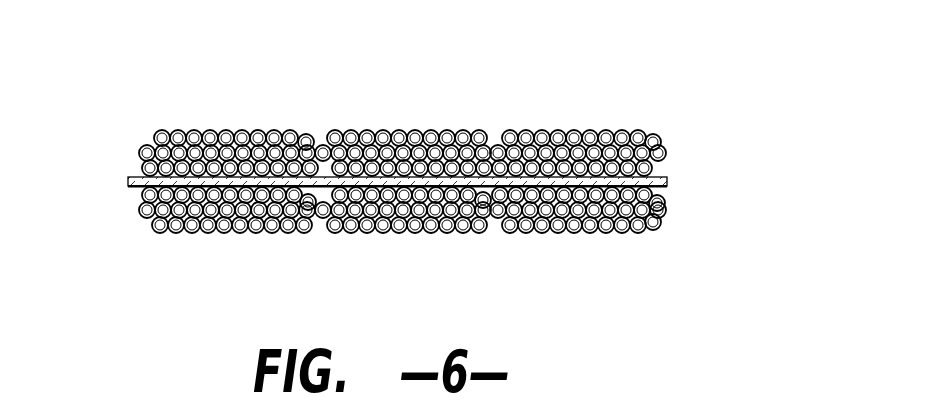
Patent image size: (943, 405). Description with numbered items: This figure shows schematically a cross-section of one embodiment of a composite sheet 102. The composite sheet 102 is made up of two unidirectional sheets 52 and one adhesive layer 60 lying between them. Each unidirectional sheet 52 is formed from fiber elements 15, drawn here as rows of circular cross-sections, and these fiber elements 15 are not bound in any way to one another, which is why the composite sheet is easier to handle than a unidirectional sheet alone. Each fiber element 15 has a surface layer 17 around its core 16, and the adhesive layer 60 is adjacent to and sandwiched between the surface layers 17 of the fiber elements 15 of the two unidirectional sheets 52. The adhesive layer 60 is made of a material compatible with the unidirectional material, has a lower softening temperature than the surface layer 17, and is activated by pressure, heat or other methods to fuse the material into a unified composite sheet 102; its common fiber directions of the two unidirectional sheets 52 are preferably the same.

The composite sheet 102 is at (633, 65).
The adhesive layer 60 is at (128, 182).
The unidirectional sheet 52 is at (677, 130).
The surface layer 17 is at (140, 216).
The bead core 16 is at (159, 229).
The fiber element 15 is at (224, 241).